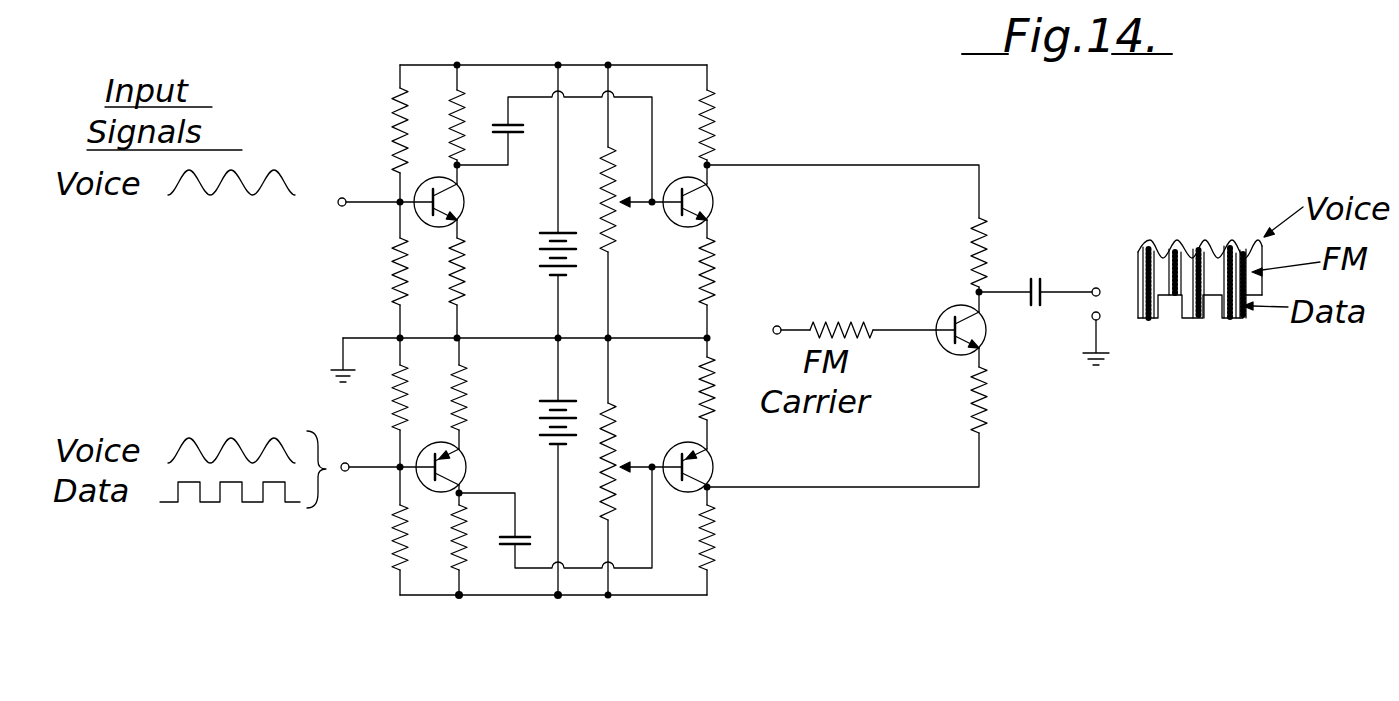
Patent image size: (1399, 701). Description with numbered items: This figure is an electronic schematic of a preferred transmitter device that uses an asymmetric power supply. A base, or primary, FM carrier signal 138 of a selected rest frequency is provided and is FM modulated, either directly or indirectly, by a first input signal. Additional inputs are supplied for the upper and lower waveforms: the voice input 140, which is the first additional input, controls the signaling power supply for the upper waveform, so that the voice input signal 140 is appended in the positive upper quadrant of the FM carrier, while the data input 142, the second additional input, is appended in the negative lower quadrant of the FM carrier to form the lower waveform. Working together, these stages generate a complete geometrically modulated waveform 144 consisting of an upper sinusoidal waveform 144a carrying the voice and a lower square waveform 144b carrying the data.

The FM carrier signal 138 is at (878, 298).
The voice input 140 is at (253, 195).
The data input 142 is at (253, 502).
The geometrically modulated waveform 144 is at (1239, 284).
The upper sinusoidal waveform 144a is at (1212, 216).
The lower square waveform 144b is at (1232, 318).